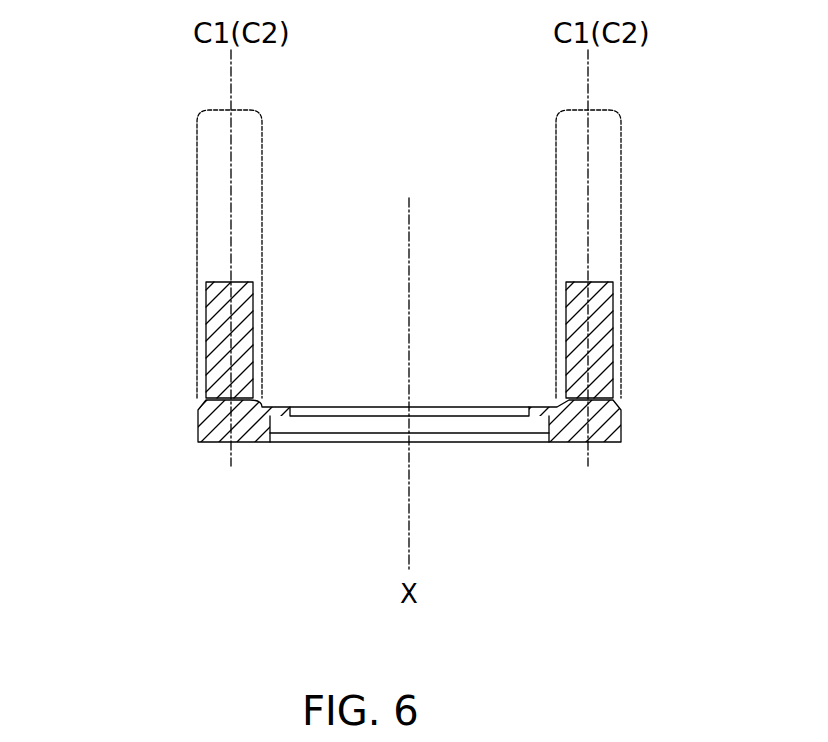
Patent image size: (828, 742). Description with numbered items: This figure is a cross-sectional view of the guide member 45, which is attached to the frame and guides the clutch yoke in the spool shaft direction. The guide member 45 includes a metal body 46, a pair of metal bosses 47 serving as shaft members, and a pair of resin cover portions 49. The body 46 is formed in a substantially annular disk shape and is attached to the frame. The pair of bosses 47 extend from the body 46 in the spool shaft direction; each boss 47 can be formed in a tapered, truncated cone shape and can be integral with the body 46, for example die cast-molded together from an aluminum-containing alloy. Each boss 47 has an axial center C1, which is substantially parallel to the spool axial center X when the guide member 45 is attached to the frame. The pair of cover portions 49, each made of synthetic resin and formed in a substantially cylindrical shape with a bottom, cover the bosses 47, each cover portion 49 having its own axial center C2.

The guide member 45 is at (155, 100).
The body 46 is at (338, 442).
The boss 47 is at (197, 345).
The cover portion 49 is at (215, 160).